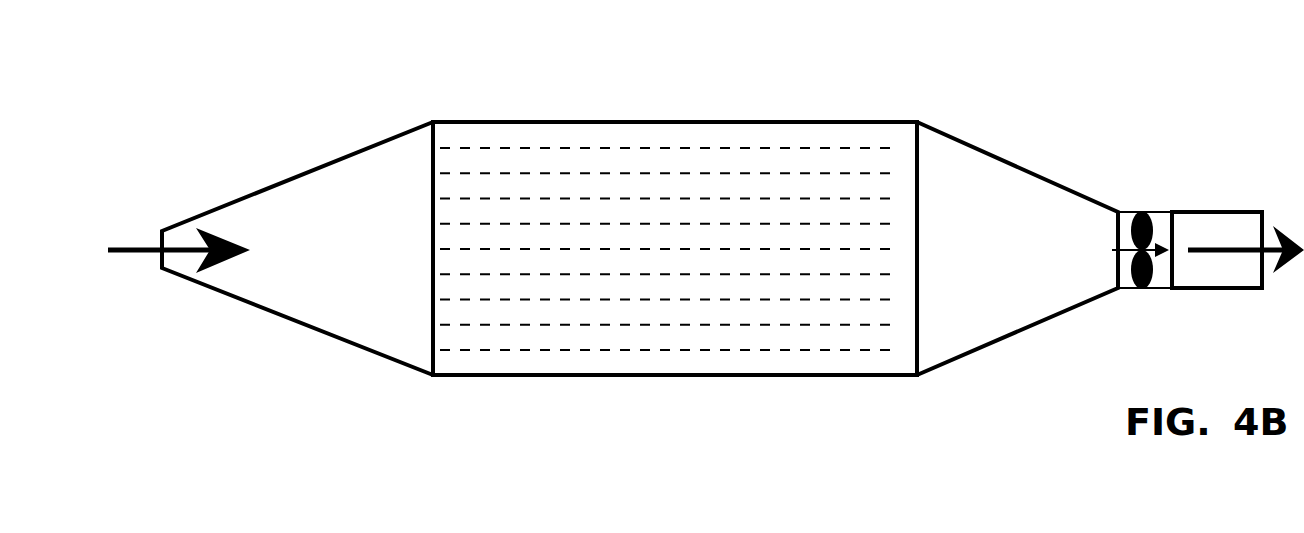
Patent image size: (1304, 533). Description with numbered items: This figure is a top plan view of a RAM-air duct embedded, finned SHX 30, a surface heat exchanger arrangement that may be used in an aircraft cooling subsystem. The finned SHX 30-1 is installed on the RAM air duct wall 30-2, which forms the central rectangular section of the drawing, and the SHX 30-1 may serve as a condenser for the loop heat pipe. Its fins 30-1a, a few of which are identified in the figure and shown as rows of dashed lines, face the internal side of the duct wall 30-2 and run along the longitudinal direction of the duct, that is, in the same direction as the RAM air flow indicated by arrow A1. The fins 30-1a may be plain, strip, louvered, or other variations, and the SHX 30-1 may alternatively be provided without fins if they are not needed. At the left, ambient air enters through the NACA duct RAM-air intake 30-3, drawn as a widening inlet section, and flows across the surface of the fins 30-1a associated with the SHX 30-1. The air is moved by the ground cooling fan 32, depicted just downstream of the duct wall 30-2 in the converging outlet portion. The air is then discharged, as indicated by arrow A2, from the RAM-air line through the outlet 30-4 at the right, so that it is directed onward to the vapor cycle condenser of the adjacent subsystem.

The RAM-air duct embedded, finned SHX 30 is at (983, 60).
The finned SHX 30-1 is at (697, 132).
The fins 30-1a is at (698, 223).
The RAM air duct wall 30-2 is at (817, 122).
The NACA duct RAM-air intake 30-3 is at (297, 248).
The outlet 30-4 is at (1200, 222).
The ground cooling fan 32 is at (1137, 212).
The RAM air flow A1 is at (126, 238).
The discharged air flow A2 is at (1227, 234).